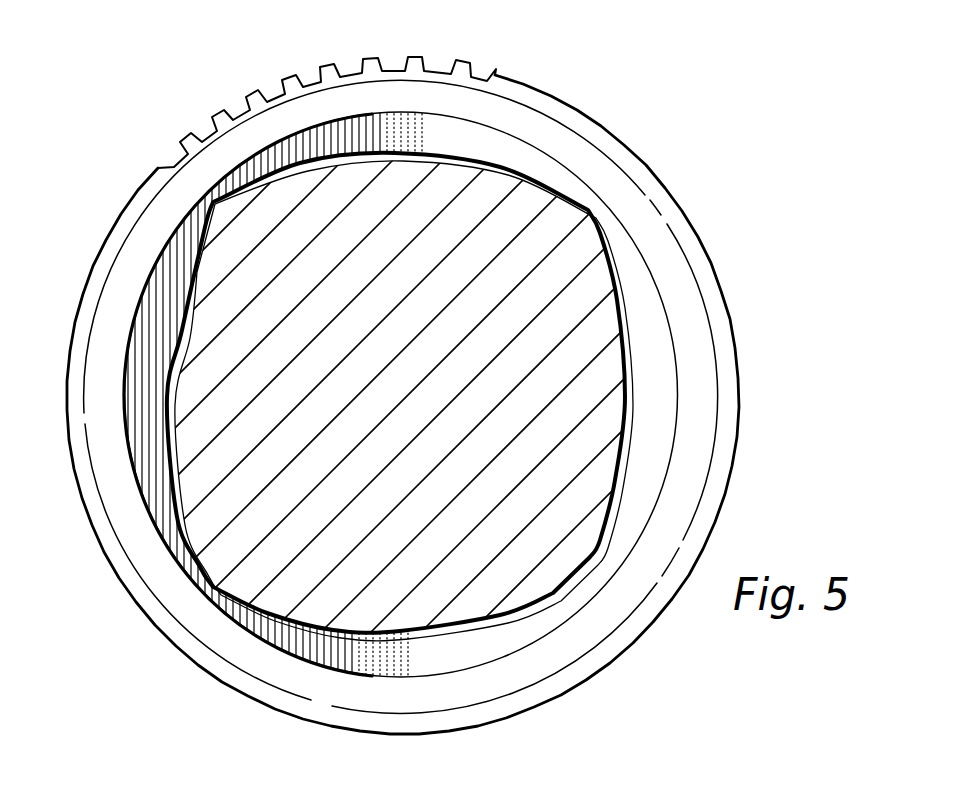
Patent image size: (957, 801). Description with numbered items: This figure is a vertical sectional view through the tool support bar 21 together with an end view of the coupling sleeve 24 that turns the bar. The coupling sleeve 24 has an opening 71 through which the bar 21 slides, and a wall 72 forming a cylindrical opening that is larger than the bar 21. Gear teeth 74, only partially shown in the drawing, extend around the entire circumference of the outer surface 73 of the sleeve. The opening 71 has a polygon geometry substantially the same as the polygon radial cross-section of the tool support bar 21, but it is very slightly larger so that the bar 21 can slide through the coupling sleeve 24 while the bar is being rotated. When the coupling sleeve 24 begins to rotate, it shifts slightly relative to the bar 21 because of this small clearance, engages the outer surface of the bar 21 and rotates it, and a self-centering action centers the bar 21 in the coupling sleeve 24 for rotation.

The tool support bar 21 is at (603, 463).
The coupling sleeve 24 is at (625, 190).
The opening 71 is at (635, 283).
The wall 72 is at (153, 507).
The outer surface 73 is at (110, 227).
The gear teeth 74 is at (290, 78).